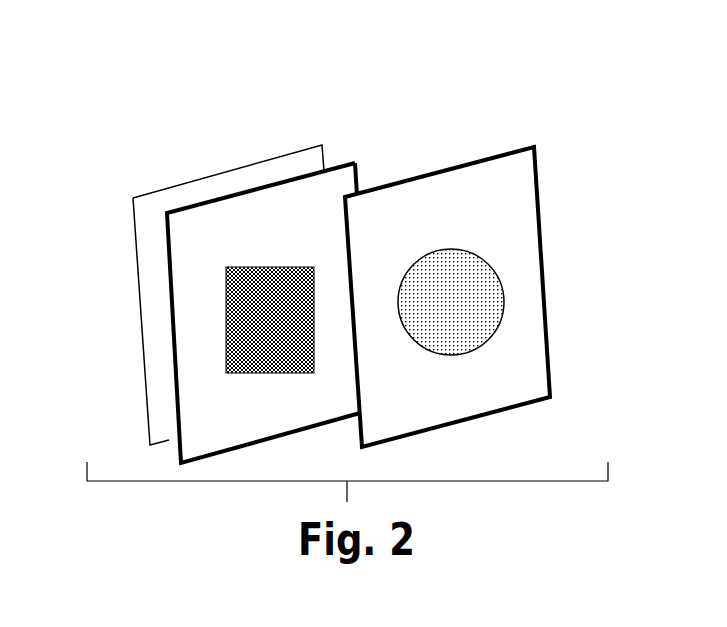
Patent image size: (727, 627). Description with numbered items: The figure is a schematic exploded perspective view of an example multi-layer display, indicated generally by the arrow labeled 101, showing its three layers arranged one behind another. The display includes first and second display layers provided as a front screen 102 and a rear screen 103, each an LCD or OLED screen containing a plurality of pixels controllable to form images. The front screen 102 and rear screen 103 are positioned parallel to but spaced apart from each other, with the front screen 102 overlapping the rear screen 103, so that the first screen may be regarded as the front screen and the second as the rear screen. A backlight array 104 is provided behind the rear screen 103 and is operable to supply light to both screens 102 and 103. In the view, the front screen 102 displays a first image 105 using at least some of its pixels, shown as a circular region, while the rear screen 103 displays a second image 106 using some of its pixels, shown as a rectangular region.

The optical assembly 101 is at (592, 93).
The front screen 102 is at (537, 168).
The rear screen 103 is at (358, 167).
The backlight array 104 is at (133, 198).
The first image 105 is at (487, 263).
The second image 106 is at (225, 320).